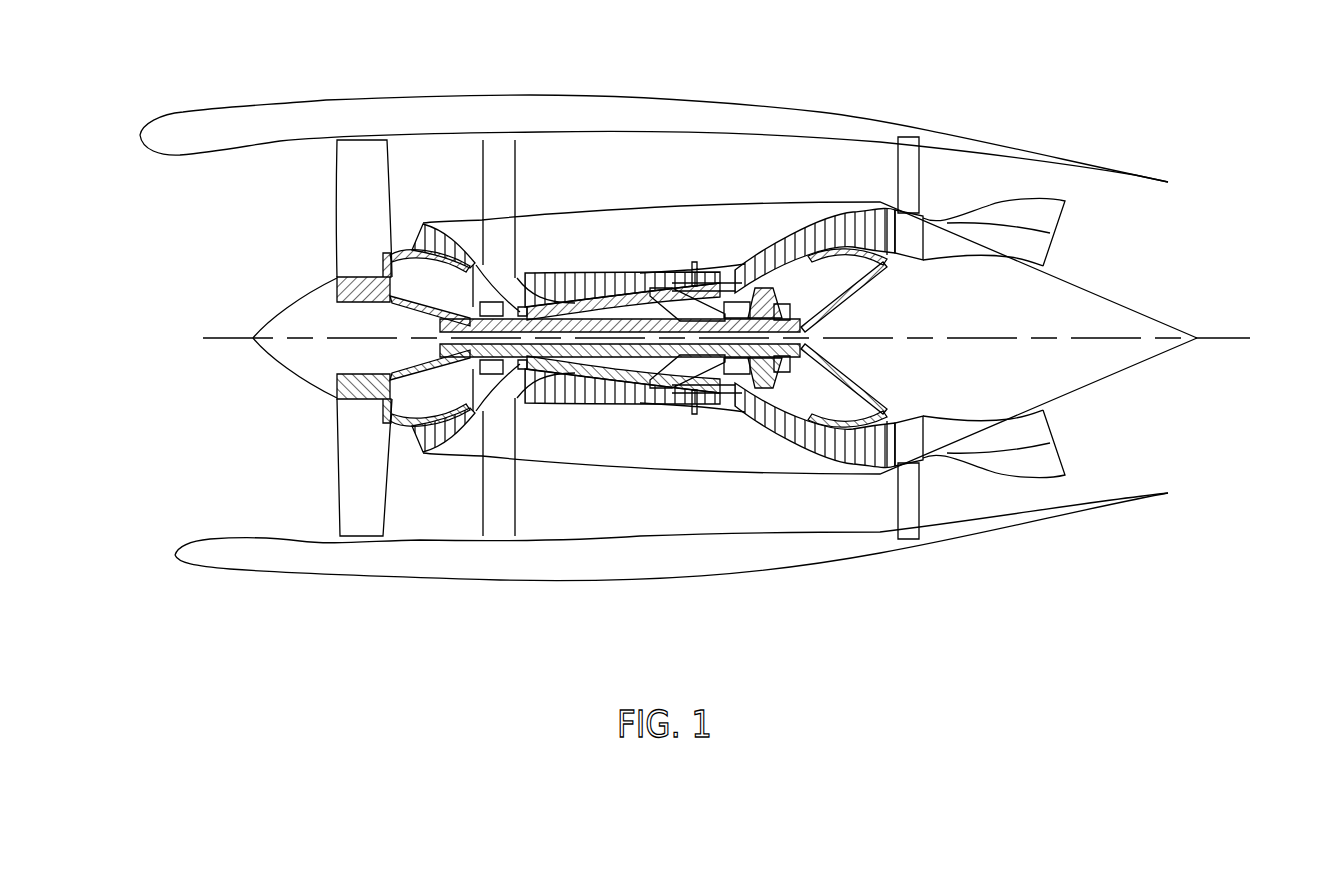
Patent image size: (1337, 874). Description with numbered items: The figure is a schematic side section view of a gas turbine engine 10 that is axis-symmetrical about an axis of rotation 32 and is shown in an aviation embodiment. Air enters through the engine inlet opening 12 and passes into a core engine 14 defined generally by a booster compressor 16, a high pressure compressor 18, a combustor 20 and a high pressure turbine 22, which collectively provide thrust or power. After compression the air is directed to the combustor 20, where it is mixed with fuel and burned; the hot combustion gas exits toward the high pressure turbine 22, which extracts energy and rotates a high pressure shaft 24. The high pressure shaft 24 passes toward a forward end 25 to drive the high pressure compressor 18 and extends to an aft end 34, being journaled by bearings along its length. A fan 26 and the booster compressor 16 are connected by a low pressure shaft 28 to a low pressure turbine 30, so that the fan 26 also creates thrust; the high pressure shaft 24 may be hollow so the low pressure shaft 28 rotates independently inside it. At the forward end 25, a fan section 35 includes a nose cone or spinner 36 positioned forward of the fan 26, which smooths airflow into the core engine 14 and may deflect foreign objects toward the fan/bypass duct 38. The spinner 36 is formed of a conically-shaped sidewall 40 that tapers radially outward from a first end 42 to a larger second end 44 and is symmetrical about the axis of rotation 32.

The gas turbine engine 10 is at (684, 329).
The engine inlet opening 12 is at (325, 298).
The core engine 14 is at (654, 353).
The booster compressor 16 is at (455, 206).
The high pressure compressor 18 is at (562, 262).
The combustor 20 is at (713, 256).
The high pressure turbine 22 is at (765, 236).
The high pressure shaft 24 is at (700, 378).
The forward end 25 is at (232, 592).
The fan 26 is at (408, 154).
The low pressure shaft 28 is at (622, 357).
The low pressure turbine 30 is at (880, 282).
The axis of rotation 32 is at (1237, 336).
The aft end 34 is at (768, 444).
The fan section 35 is at (270, 358).
The spinner 36 is at (300, 310).
The fan/bypass duct 38 is at (336, 278).
The conically-shaped sidewall 40 is at (275, 360).
The first end 42 is at (256, 337).
The second end 44 is at (337, 410).